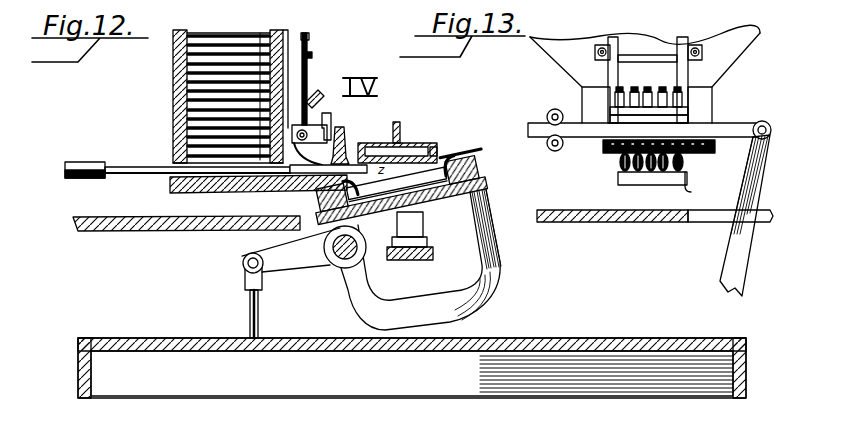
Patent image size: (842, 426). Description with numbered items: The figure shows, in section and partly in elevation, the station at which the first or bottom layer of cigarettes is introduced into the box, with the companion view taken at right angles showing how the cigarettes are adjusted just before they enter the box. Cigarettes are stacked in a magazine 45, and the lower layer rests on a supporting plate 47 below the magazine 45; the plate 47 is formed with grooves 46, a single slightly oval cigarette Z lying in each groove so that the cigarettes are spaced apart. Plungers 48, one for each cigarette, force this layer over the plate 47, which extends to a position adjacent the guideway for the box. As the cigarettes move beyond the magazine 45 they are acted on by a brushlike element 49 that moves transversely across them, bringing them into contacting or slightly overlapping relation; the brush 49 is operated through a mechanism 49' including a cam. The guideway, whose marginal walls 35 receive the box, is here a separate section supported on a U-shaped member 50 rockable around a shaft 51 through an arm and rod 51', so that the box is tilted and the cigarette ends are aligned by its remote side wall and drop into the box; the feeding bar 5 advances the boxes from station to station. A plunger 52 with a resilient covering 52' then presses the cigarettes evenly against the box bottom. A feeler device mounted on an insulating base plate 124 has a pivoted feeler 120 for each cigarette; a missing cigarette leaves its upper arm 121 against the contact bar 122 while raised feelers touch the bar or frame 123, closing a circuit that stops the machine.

In FIG. 12, the magazine 45 is at (173, 100).
In FIG. 13, the magazine 45 is at (563, 62).
In FIG. 12, the plungers 48 is at (130, 167).
In FIG. 12, the supporting plate 47 is at (170, 188).
In FIG. 13, the supporting plate 47 is at (618, 183).
In FIG. 12, the brushlike element 49 is at (354, 141).
In FIG. 13, the brushlike element 49 is at (646, 163).
In FIG. 12, the base plate 124 is at (310, 44).
In FIG. 12, the bar or frame 123 is at (309, 66).
In FIG. 12, the upper arm of feeler 121 is at (323, 90).
In FIG. 12, the contact bar 122 is at (331, 116).
In FIG. 12, the feeler 120 is at (318, 146).
In FIG. 12, the plunger 52 is at (397, 138).
In FIG. 12, the resilient covering 52' is at (452, 142).
In FIG. 12, the marginal walls of guideway 35 is at (486, 176).
In FIG. 12, the U-shaped member 50 is at (497, 278).
In FIG. 12, the shaft 51 is at (336, 262).
In FIG. 12, the arm and rod 51' is at (291, 283).
In FIG. 12, the bar 5 is at (412, 260).
In FIG. 13, the grooves 46 is at (684, 192).
In FIG. 13, the mechanism 49' is at (721, 215).
In FIG. 13, the cigarette z is at (690, 158).